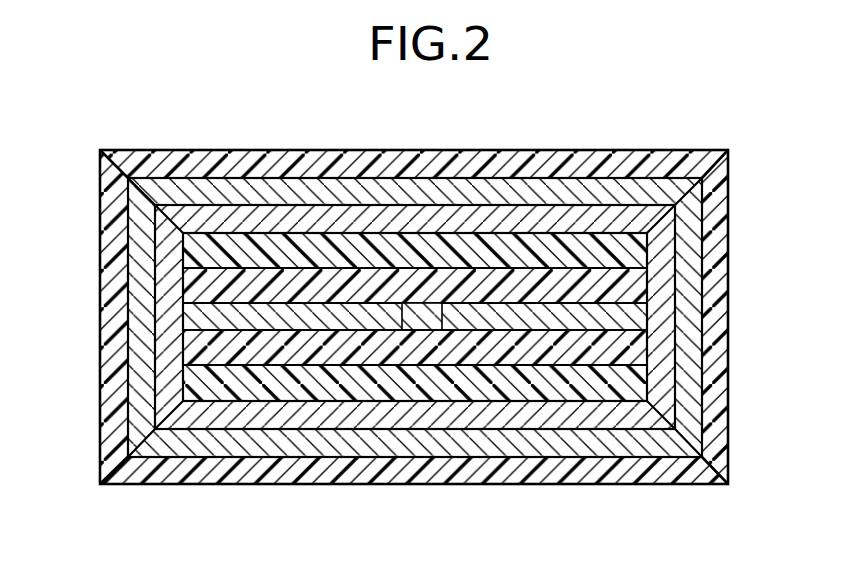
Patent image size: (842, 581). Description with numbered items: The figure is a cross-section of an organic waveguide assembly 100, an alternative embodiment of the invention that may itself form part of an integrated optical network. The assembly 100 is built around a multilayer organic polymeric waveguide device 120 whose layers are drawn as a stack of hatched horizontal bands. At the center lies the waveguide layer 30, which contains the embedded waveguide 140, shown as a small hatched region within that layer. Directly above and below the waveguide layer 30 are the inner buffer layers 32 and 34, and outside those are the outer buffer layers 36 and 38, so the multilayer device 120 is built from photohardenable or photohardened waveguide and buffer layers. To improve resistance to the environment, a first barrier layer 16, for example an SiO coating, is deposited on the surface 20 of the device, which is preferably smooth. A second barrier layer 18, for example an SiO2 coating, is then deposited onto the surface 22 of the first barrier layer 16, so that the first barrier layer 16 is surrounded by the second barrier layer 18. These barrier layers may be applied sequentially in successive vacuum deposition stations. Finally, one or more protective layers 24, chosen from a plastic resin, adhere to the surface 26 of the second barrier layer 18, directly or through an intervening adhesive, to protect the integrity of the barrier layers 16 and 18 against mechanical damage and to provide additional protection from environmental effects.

The waveguide assembly 100 is at (122, 126).
The first barrier layer 16 is at (203, 220).
The second barrier layer 18 is at (272, 196).
The surface of the device 20 is at (437, 400).
The surface of the first barrier layer 22 is at (523, 430).
The protective layer 24 is at (520, 158).
The surface of second barrier layer 26 is at (587, 177).
The waveguide layer 30 is at (630, 318).
The inner buffer layer 32 is at (627, 288).
The inner buffer layer 34 is at (633, 357).
The outer buffer layer 36 is at (633, 253).
The outer buffer layer 38 is at (633, 385).
The multilayer organic polymeric waveguide device 120 is at (267, 402).
The embedded waveguide 140 is at (416, 317).